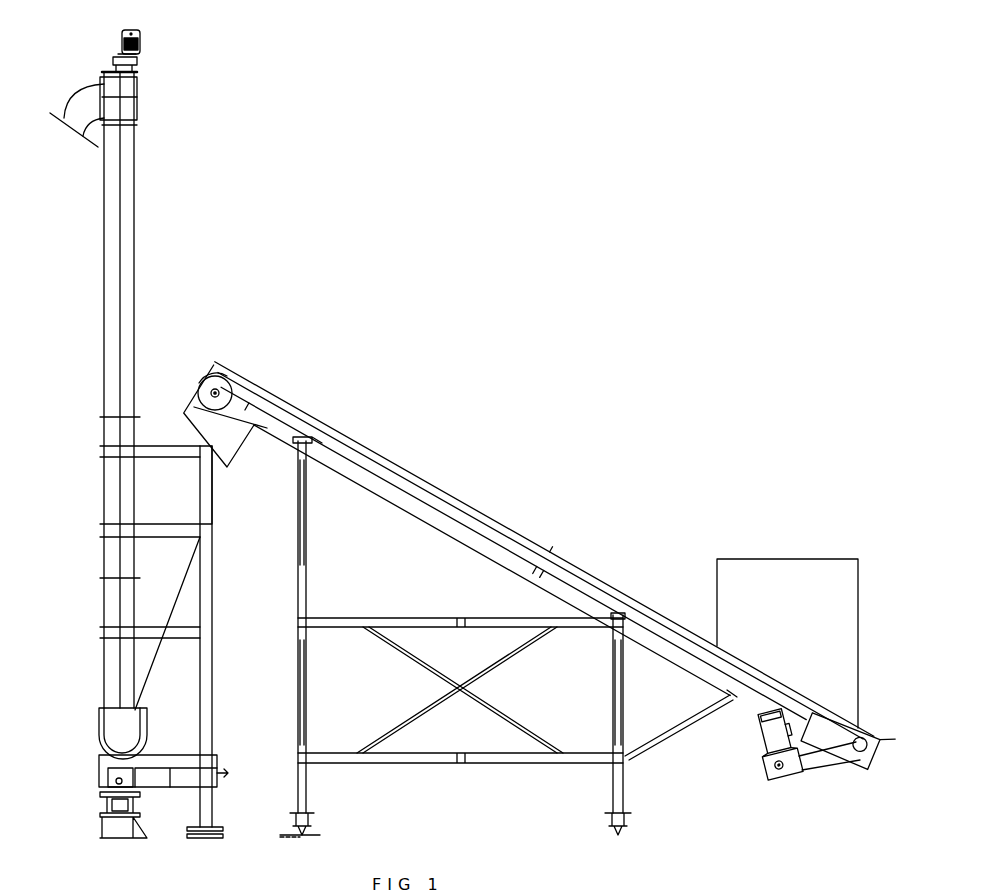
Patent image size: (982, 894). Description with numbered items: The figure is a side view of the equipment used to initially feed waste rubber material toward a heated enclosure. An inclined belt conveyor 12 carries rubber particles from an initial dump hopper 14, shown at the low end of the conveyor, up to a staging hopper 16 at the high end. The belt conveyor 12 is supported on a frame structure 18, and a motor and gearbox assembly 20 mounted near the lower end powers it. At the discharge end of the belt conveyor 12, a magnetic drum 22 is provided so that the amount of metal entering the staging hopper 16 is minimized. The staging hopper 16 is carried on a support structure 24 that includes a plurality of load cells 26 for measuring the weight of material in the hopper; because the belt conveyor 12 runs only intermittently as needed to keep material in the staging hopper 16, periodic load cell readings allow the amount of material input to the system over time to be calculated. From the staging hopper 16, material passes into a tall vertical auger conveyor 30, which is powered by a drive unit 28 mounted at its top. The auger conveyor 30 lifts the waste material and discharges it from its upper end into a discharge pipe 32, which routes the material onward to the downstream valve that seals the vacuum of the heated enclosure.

The belt conveyor 12 is at (476, 524).
The initial dump hopper 14 is at (856, 623).
The staging hopper 16 is at (190, 513).
The frame structure 18 is at (308, 592).
The motor and gearbox assembly 20 is at (768, 733).
The magnetic drum 22 is at (226, 381).
The support structure 24 is at (210, 586).
The load cells 26 is at (212, 831).
The drive unit 28 is at (140, 41).
The vertical auger conveyor 30 is at (136, 271).
The discharge pipe 32 is at (72, 98).